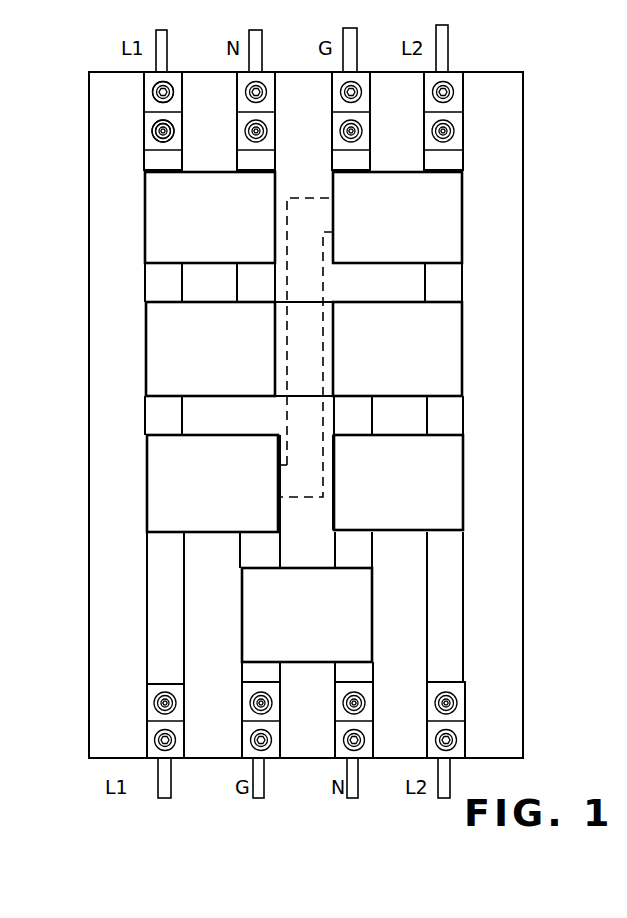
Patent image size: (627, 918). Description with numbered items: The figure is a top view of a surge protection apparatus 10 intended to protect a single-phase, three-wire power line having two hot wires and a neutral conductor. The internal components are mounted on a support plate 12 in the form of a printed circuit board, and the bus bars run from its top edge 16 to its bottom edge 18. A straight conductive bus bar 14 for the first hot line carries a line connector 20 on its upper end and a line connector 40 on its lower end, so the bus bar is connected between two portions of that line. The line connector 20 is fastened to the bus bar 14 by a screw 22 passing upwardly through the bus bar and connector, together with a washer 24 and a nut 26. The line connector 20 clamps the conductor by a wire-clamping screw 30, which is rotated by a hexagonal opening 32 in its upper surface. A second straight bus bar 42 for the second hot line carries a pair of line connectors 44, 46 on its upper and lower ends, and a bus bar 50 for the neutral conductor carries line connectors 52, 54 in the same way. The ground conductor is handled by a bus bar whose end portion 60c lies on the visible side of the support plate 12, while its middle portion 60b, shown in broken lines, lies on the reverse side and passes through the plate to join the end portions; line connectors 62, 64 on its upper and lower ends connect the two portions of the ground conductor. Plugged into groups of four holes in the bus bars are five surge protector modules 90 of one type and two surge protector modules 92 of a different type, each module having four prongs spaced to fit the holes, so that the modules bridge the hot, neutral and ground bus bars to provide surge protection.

The surge protection apparatus 10 is at (80, 64).
The support plate 12 is at (524, 190).
The bus bar 14 is at (158, 290).
The top edge 16 is at (89, 72).
The bottom edge 18 is at (116, 758).
The line connector 20 is at (136, 133).
The screw 22 is at (158, 133).
The washer 24 is at (156, 142).
The nut 26 is at (150, 138).
The screw 30 is at (150, 82).
The hexagonal opening 32 is at (148, 96).
The line connector 40 is at (145, 713).
The bus bar 42 is at (452, 564).
The line connector 44 is at (466, 129).
The line connector 46 is at (468, 704).
The bus bar 50 is at (373, 556).
The line connector 52 is at (277, 129).
The line connector 54 is at (376, 704).
The middle portion 60b is at (323, 285).
The end portion 60c is at (263, 551).
The line connector 62 is at (372, 129).
The line connector 64 is at (282, 706).
The surge protector module 90 is at (304, 417).
The surge protector module 92 is at (304, 349).